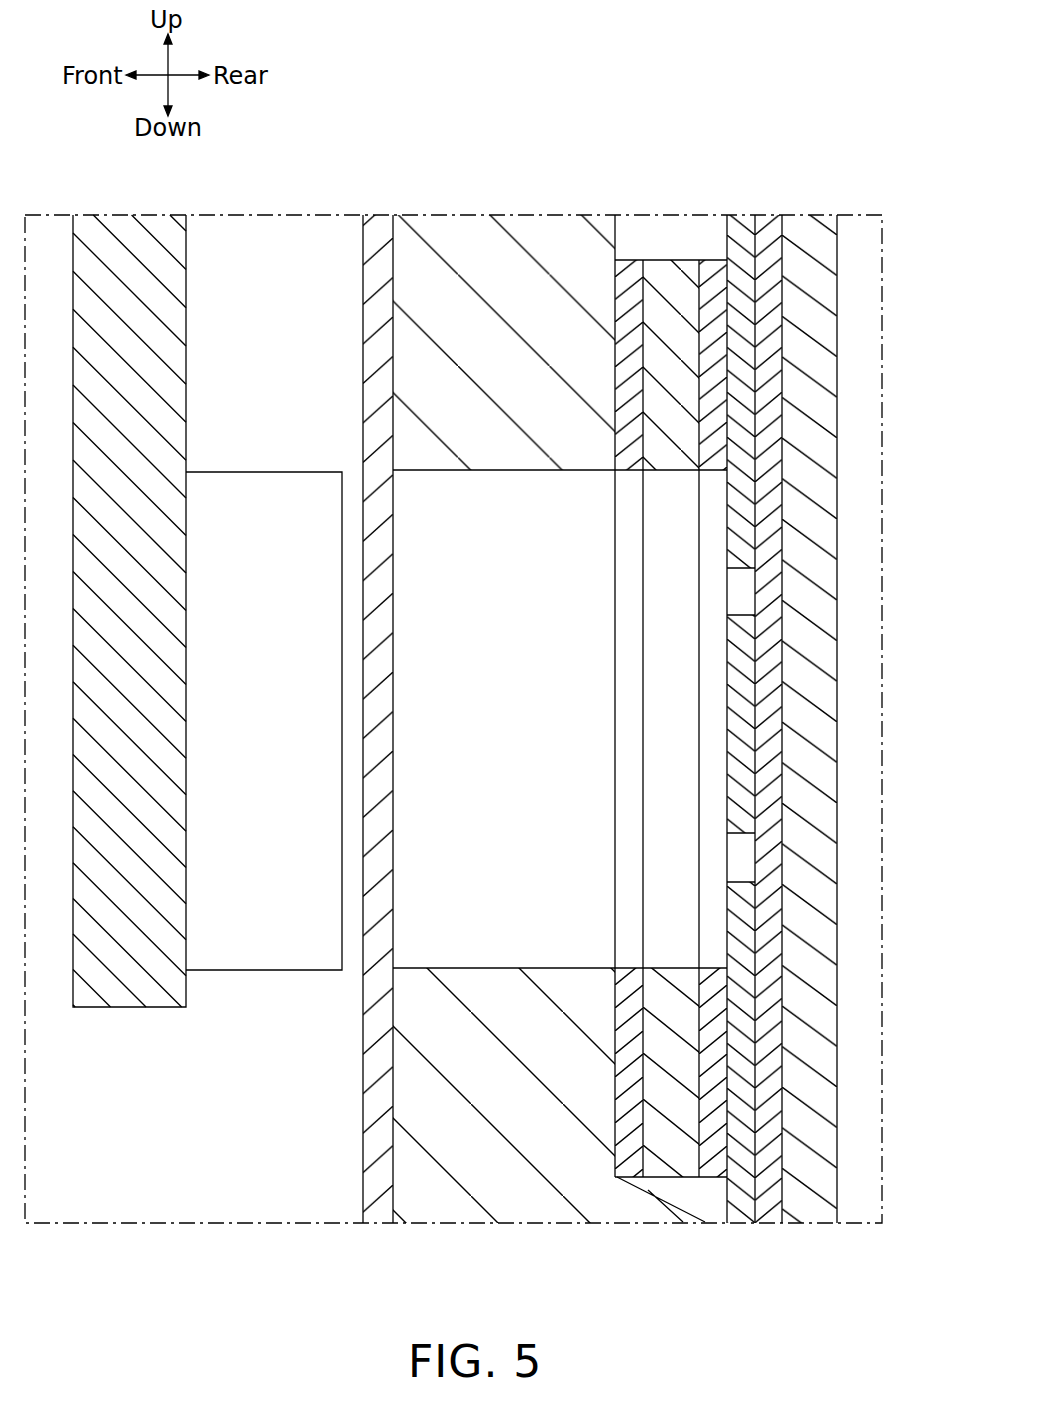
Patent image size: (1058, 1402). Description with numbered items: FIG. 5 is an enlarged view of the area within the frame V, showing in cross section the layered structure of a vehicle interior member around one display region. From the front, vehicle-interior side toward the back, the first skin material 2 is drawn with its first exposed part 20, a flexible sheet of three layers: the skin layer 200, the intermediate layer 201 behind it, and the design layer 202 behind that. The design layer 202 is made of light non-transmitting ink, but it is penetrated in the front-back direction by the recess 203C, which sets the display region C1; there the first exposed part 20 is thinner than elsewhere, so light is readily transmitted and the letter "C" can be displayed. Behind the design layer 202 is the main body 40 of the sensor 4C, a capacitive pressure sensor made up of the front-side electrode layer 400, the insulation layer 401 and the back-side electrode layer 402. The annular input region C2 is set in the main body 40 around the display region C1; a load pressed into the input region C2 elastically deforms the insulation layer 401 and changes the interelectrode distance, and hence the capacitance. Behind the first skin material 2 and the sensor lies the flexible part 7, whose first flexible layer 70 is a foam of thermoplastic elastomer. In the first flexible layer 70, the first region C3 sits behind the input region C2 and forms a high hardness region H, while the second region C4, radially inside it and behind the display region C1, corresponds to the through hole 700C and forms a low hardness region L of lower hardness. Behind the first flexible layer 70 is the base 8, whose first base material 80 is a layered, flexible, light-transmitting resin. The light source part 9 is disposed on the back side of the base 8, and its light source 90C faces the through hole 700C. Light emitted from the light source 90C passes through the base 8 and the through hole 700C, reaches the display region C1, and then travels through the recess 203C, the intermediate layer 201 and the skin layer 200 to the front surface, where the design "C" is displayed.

The first skin material 2 is at (838, 137).
The frame V is at (862, 215).
The light source part 9 is at (118, 232).
The light source 90C is at (232, 955).
The base 8 is at (378, 227).
The first base material 80 is at (380, 1218).
The flexible part 7 is at (448, 227).
The first flexible layer 70 is at (565, 1213).
The through hole 700C is at (475, 542).
The first region C3 is at (513, 373).
The high hardness region H is at (441, 731).
The input region C2 is at (655, 320).
The second region C4 is at (523, 652).
The low hardness region L is at (487, 638).
The main body 40 is at (719, 636).
The back-side electrode layer 402 is at (630, 262).
The insulation layer 401 is at (668, 267).
The front-side electrode layer 400 is at (708, 267).
The sensor 4C is at (670, 1157).
The first exposed part 20 is at (831, 790).
The skin layer 200 is at (815, 1202).
The intermediate layer 201 is at (770, 1200).
The design layer 202 is at (742, 1200).
The display region C1 is at (738, 572).
The recess 203C is at (742, 882).